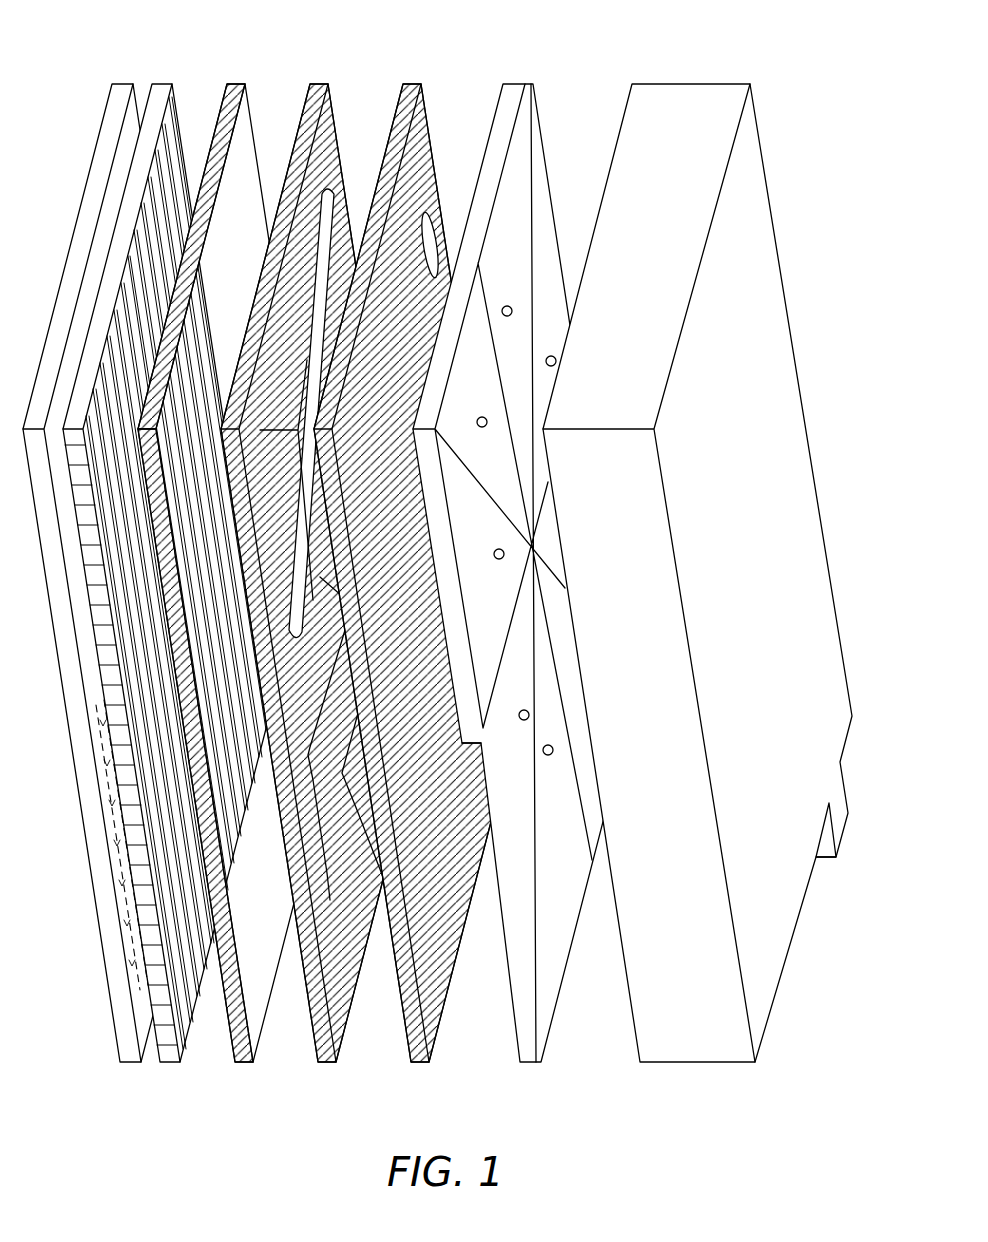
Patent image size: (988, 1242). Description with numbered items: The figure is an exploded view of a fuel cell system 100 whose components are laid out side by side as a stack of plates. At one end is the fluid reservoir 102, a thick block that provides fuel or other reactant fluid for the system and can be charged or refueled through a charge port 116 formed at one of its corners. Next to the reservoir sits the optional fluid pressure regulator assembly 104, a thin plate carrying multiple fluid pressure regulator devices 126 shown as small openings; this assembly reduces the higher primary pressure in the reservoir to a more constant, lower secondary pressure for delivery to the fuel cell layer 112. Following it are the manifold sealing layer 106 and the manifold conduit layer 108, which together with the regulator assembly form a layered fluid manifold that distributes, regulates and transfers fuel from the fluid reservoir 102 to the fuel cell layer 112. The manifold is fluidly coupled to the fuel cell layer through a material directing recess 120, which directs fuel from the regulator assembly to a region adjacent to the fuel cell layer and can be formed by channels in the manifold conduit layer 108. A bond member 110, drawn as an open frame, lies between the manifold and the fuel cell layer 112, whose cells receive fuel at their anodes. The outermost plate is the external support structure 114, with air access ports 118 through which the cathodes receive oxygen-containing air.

The fuel cell system 100 is at (140, 20).
The fluid reservoir 102 is at (707, 573).
The fluid pressure regulator assembly 104 is at (521, 573).
The manifold sealing layer 106 is at (416, 573).
The manifold conduit layer 108 is at (330, 955).
The bond member 110 is at (240, 1060).
The fuel cell layer 112 is at (172, 1060).
The external support structure 114 is at (106, 886).
The charge port 116 is at (845, 836).
The air access ports 118 is at (112, 823).
The material directing recess 120 is at (418, 224).
The fluid pressure regulator devices 126 is at (507, 306).